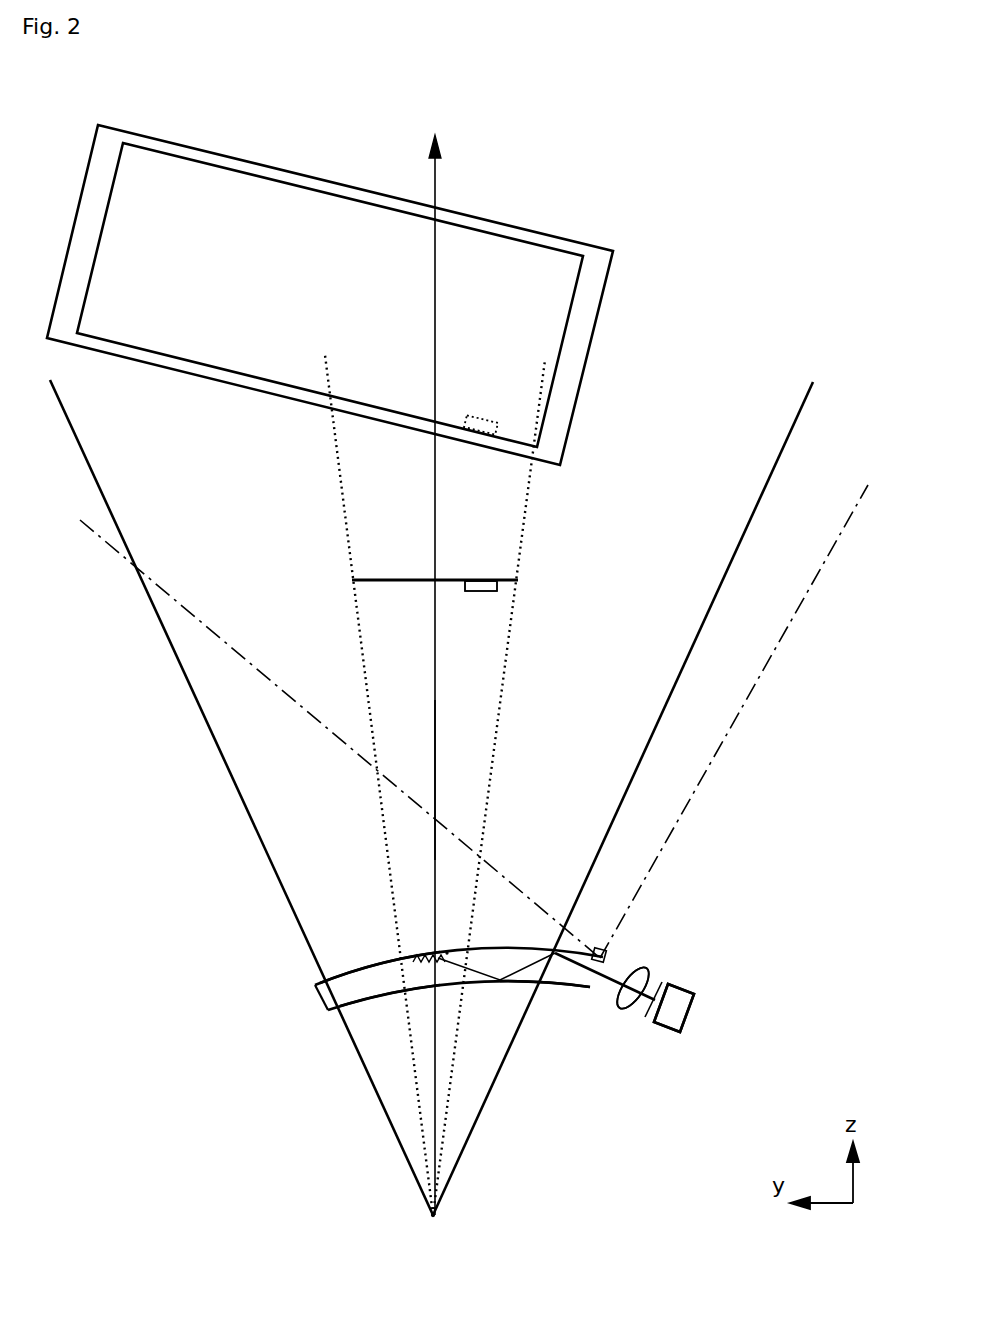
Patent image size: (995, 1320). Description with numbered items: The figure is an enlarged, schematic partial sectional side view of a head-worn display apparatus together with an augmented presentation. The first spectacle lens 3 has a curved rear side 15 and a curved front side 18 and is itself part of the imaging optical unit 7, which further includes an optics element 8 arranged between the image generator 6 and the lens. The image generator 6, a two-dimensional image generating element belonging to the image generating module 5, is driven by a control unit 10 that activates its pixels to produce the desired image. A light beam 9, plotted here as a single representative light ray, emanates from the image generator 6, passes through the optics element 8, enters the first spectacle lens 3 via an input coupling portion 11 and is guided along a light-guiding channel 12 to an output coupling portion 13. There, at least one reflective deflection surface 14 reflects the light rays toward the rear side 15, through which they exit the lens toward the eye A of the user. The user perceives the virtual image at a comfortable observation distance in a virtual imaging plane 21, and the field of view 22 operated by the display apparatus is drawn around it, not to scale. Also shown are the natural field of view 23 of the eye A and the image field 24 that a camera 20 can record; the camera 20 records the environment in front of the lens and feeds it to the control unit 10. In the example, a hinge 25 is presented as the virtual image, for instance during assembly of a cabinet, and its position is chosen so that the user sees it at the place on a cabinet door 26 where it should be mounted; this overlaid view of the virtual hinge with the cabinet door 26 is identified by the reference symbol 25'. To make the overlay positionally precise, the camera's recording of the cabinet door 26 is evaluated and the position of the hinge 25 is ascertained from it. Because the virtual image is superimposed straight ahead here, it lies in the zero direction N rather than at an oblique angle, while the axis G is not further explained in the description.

The first spectacle lens 3 is at (313, 1004).
The image generating module 5 is at (697, 992).
The image generator 6 is at (674, 982).
The imaging optical unit 7 is at (652, 957).
The optics element 8 is at (628, 1010).
The light beam 9 is at (632, 968).
The control unit 10 is at (682, 1032).
The input coupling portion 11 is at (592, 990).
The light-guiding channel 12 is at (525, 977).
The output coupling portion 13 is at (449, 947).
The reflective deflection surface 14 is at (423, 962).
The rear side 15 is at (383, 993).
The front side 18 is at (370, 963).
The camera 20 is at (602, 948).
The virtual imaging plane 21 is at (497, 585).
The field of view 22 is at (518, 580).
The natural field of view 23 is at (693, 650).
The image field 24 is at (702, 775).
The hinge 25 is at (448, 785).
The overlaid view of the virtual hinge with the cabinet door 25' is at (557, 414).
The cabinet door 26 is at (600, 310).
The zero direction N is at (435, 178).
The axis G is at (434, 782).
The eye A is at (435, 1217).